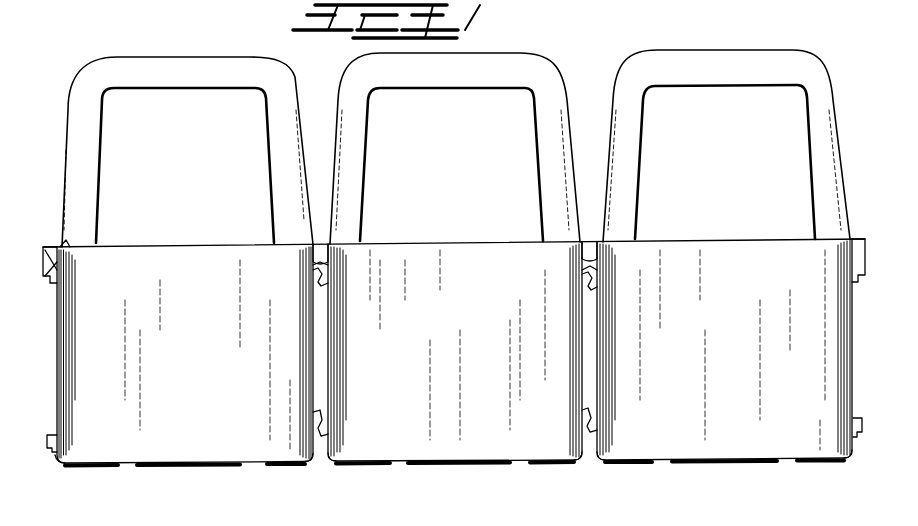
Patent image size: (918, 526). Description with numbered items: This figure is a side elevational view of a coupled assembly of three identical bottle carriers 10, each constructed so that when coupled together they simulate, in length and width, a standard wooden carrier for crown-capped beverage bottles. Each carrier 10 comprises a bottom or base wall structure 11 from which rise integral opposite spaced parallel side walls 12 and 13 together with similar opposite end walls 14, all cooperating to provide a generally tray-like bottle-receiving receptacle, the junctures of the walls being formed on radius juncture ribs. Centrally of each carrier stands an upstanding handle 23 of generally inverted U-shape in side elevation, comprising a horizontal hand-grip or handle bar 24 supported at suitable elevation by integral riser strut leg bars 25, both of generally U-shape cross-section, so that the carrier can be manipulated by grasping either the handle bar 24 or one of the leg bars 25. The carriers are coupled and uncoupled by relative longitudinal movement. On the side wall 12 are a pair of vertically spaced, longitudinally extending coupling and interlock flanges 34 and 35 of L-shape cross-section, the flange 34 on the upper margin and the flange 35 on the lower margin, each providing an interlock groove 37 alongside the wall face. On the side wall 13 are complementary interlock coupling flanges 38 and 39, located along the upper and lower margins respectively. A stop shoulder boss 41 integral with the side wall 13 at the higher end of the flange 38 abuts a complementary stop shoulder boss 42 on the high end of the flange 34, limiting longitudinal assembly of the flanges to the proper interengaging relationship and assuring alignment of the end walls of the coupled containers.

The bottle-carrier structure 10 is at (163, 471).
The bottom or base wall structure 11 is at (190, 467).
The side wall 12 is at (53, 335).
The side wall 13 is at (318, 367).
The end wall 14 is at (148, 253).
The handle 23 is at (295, 69).
The handle bar 24 is at (185, 97).
The leg bar 25 is at (338, 100).
The coupling and interlock flange 34 is at (64, 246).
The coupling and interlock flange 35 is at (52, 466).
The interlock groove 37 is at (56, 283).
The interlock coupling flange 38 is at (324, 281).
The interlock coupling flange 39 is at (318, 418).
The stop shoulder boss 41 is at (847, 242).
The stop shoulder boss 42 is at (52, 243).